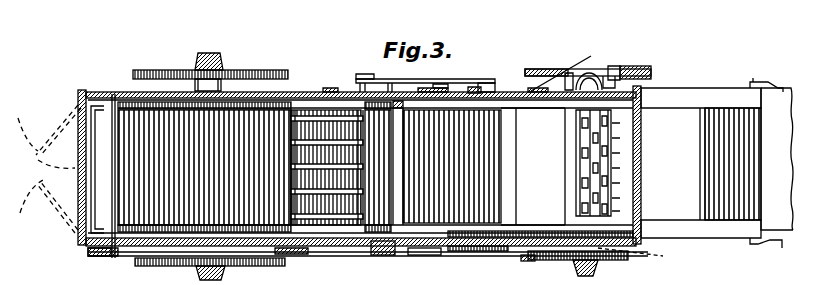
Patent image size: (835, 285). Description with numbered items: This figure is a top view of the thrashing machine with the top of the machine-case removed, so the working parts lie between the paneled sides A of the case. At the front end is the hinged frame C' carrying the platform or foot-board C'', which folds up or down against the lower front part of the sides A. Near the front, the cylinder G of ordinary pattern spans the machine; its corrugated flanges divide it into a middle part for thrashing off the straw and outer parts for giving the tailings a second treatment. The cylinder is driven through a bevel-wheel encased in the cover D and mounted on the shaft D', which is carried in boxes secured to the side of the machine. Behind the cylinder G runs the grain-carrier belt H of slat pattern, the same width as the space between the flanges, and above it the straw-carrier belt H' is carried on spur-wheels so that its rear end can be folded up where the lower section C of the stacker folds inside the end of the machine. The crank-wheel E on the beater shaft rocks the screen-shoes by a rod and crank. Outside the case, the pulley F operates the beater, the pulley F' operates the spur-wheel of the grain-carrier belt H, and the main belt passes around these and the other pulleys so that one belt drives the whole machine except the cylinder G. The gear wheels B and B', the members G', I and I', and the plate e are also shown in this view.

The sides of the machine A is at (317, 83).
The gear wheel B is at (598, 170).
The gear wheel B' is at (210, 166).
The lower section of the stacker C is at (49, 196).
The hinged frame C' is at (49, 130).
The platform or foot-board C'' is at (749, 159).
The cover D is at (591, 62).
The shaft D' is at (588, 68).
The crank-wheel E is at (419, 75).
The pulley F is at (424, 261).
The pulley F' is at (478, 259).
The cylinder G is at (580, 163).
The grate frame G' is at (573, 163).
The grain-carrier belt H is at (518, 173).
The straw-carrier belt H' is at (204, 167).
The ladder frame I is at (327, 167).
The slats I' is at (378, 167).
The plate e is at (533, 166).